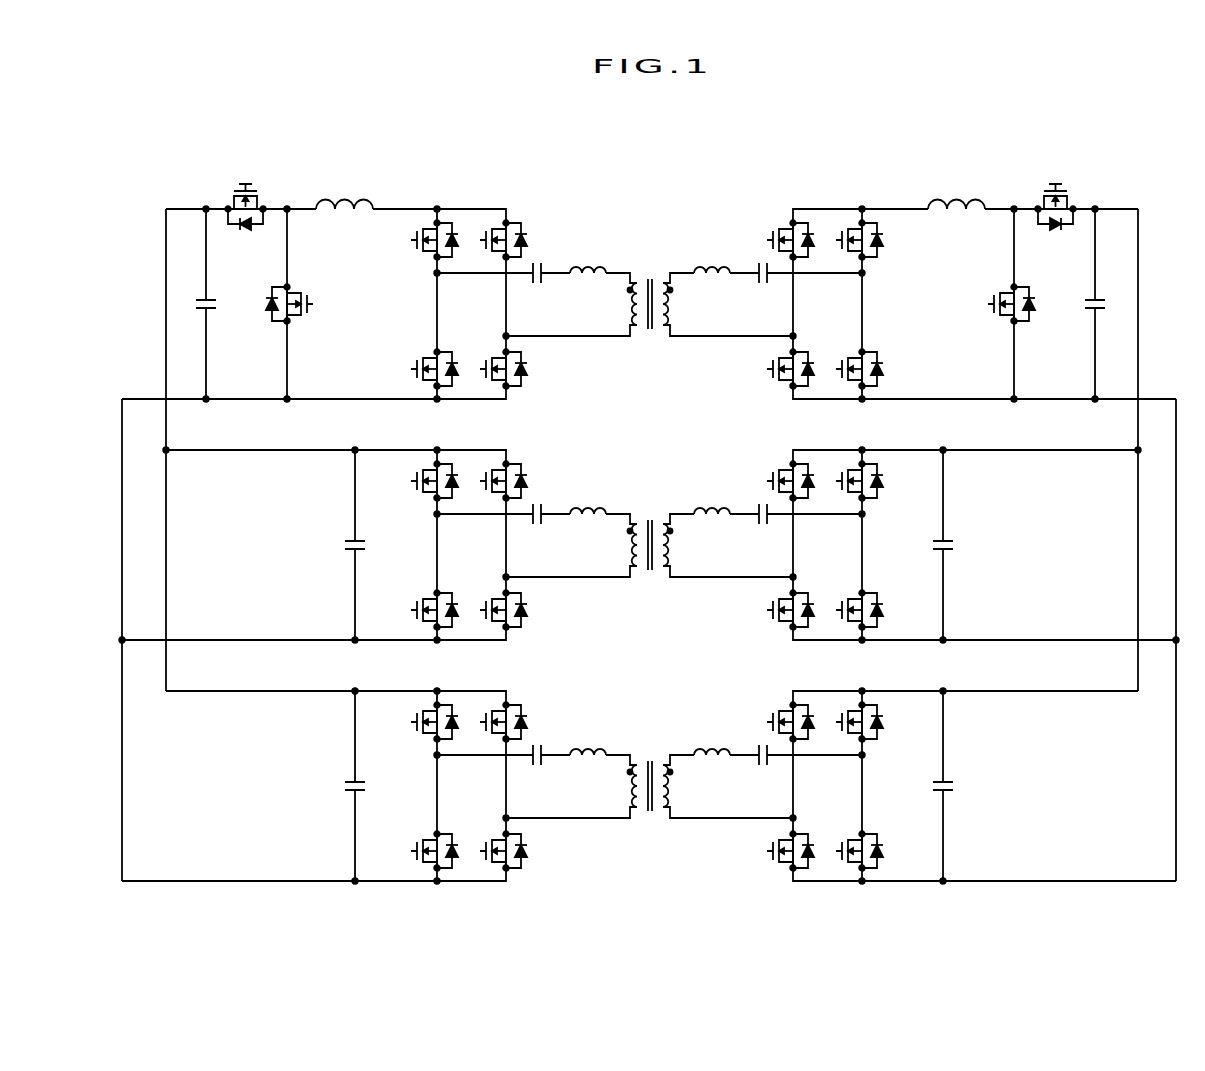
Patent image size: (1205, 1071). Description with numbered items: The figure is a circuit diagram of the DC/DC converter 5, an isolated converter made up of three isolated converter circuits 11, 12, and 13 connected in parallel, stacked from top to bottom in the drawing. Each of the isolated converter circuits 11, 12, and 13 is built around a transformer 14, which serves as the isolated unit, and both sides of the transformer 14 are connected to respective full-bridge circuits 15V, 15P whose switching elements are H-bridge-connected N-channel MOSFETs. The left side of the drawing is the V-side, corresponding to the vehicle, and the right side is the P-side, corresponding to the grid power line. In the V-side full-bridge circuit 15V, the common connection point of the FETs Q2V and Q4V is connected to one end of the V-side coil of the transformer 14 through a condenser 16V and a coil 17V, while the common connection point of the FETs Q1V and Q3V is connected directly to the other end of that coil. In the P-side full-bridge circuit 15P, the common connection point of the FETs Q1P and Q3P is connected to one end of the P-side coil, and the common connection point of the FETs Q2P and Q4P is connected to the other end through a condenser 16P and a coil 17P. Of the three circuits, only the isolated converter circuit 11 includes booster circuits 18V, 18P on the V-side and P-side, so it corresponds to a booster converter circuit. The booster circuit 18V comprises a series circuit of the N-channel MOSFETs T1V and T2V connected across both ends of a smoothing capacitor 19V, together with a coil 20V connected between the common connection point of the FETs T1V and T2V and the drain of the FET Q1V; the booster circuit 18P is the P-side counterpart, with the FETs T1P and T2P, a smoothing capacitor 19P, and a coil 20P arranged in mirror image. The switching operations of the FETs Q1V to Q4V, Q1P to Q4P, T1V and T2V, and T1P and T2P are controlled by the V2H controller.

The DC/DC converter 5 is at (833, 95).
The isolated converter circuit 11 is at (681, 182).
The isolated converter circuit 12 is at (670, 488).
The isolated converter circuit 13 is at (670, 738).
The transformer 14 is at (648, 277).
The full-bridge circuit 15V is at (513, 204).
The full-bridge circuit 15P is at (869, 192).
The condenser 16V is at (541, 265).
The condenser 16P is at (754, 264).
The coil 17V is at (586, 264).
The coil 17P is at (712, 264).
The booster circuit 18V is at (349, 179).
The booster circuit 18P is at (1001, 196).
The smoothing capacitor 19V is at (193, 305).
The smoothing capacitor 19P is at (1112, 303).
The coil 20V is at (366, 192).
The coil 20P is at (957, 190).
The N-channel MOSFET T1V is at (224, 203).
The N-channel MOSFET T2V is at (304, 304).
The N-channel MOSFET T1P is at (1074, 202).
The N-channel MOSFET T2P is at (997, 304).
The FET Q1V is at (494, 223).
The FET Q2V is at (451, 221).
The FET Q3V is at (499, 391).
The FET Q4V is at (429, 391).
The FET Q1P is at (784, 222).
The FET Q2P is at (852, 222).
The FET Q3P is at (783, 391).
The FET Q4P is at (853, 391).